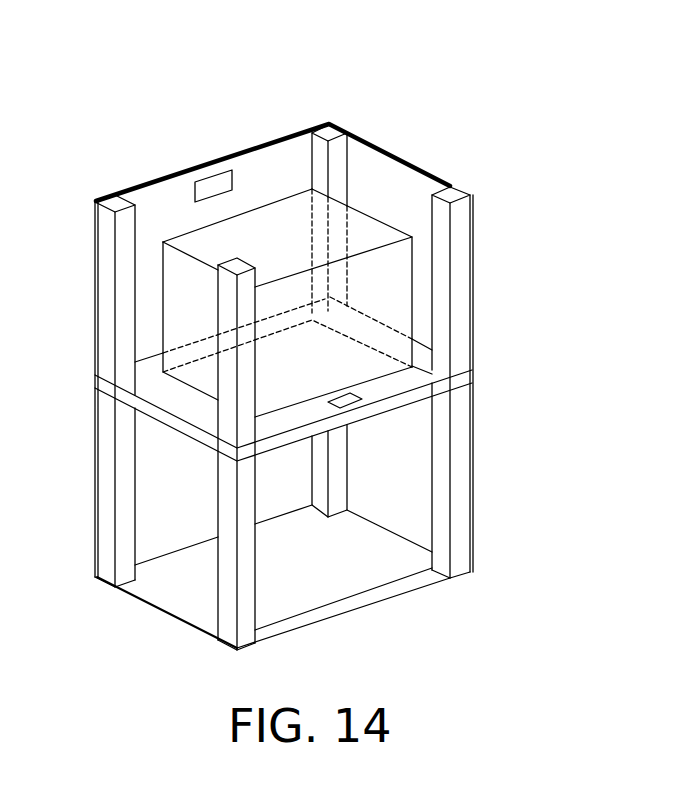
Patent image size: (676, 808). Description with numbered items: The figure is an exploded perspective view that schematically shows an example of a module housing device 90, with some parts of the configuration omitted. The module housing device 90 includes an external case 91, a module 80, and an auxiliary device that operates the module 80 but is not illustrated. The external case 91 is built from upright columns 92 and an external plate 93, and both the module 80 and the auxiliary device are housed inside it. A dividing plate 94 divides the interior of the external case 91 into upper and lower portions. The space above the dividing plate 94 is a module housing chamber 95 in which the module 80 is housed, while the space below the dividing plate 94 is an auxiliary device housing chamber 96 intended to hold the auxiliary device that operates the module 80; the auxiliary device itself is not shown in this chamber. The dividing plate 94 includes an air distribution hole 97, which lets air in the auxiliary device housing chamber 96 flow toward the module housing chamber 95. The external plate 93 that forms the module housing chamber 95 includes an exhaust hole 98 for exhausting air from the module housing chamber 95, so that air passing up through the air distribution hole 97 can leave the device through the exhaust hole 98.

The module housing device 90 is at (97, 100).
The external case 91 is at (397, 68).
The columns 92 is at (328, 121).
The external plate 93 is at (367, 141).
The dividing plate 94 is at (469, 379).
The module housing chamber 95 is at (384, 192).
The auxiliary device housing chamber 96 is at (408, 487).
The air distribution hole 97 is at (350, 390).
The exhaust hole 98 is at (209, 178).
The module 80 is at (414, 288).